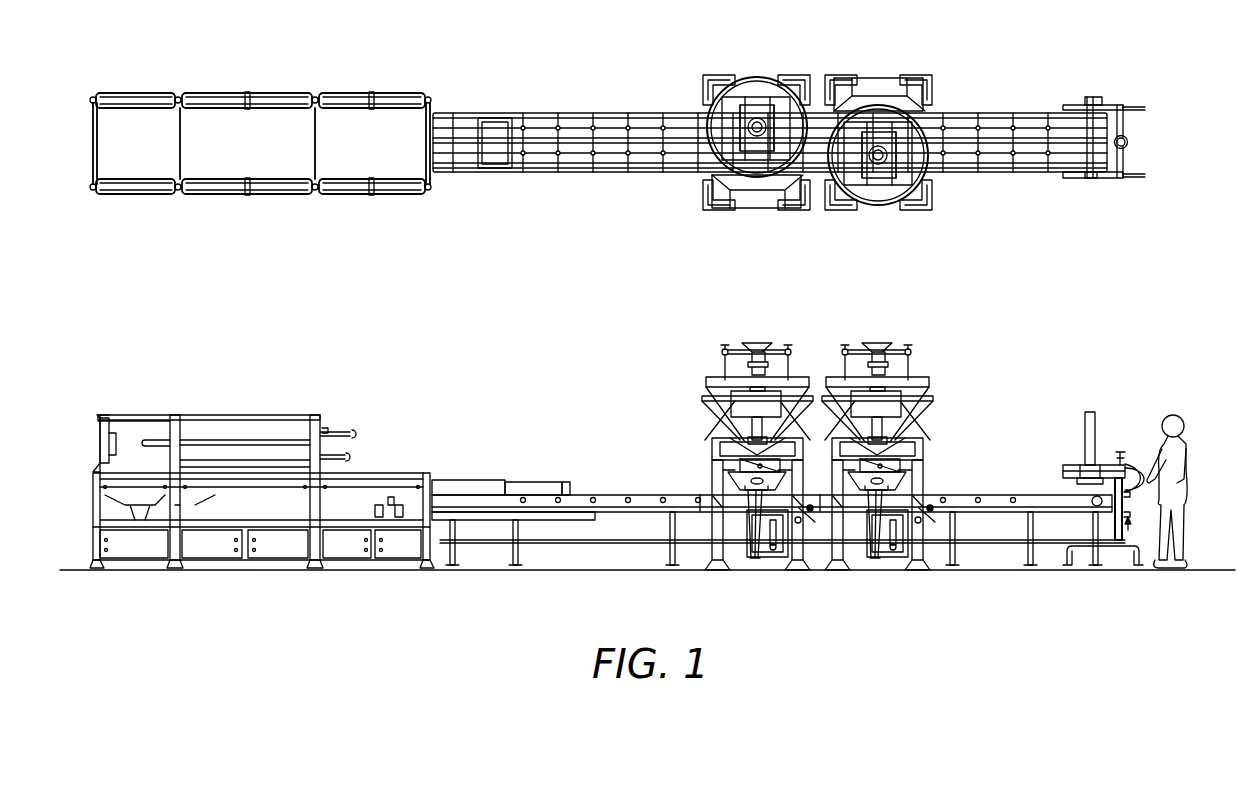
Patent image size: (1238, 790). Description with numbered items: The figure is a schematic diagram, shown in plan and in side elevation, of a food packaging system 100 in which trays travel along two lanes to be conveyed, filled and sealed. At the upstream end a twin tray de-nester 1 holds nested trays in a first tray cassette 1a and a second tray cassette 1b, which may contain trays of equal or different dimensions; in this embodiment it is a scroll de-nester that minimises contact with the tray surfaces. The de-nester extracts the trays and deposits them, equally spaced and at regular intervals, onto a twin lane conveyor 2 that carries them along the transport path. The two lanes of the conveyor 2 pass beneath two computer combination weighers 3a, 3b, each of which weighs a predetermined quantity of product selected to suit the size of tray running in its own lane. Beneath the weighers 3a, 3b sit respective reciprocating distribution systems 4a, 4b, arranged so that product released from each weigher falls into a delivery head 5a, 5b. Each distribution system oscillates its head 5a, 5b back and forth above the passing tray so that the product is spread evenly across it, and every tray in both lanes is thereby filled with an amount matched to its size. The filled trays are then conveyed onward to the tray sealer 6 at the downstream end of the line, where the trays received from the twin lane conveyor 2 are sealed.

The food packaging system 100 is at (299, 59).
The twin tray de-nester 1 is at (1089, 80).
The first tray cassette 1a is at (1105, 120).
The second tray cassette 1b is at (1092, 176).
The twin lane conveyor 2 is at (968, 113).
The first computer combination weigher 3a is at (757, 78).
The second computer combination weigher 3b is at (880, 80).
The first reciprocating distribution system 4a is at (767, 560).
The second reciprocating distribution system 4b is at (887, 560).
The first delivery head 5a is at (746, 497).
The second delivery head 5b is at (888, 497).
The tray sealer 6 is at (160, 66).